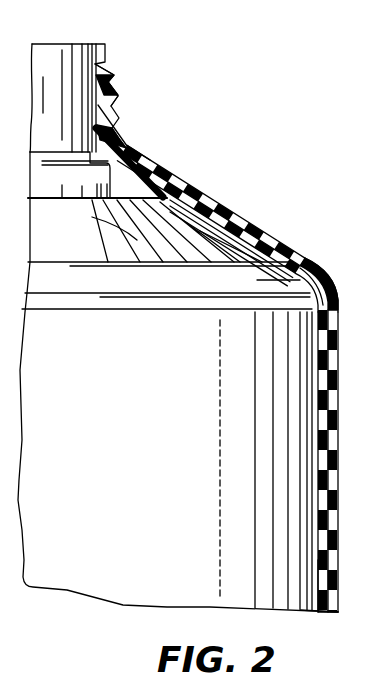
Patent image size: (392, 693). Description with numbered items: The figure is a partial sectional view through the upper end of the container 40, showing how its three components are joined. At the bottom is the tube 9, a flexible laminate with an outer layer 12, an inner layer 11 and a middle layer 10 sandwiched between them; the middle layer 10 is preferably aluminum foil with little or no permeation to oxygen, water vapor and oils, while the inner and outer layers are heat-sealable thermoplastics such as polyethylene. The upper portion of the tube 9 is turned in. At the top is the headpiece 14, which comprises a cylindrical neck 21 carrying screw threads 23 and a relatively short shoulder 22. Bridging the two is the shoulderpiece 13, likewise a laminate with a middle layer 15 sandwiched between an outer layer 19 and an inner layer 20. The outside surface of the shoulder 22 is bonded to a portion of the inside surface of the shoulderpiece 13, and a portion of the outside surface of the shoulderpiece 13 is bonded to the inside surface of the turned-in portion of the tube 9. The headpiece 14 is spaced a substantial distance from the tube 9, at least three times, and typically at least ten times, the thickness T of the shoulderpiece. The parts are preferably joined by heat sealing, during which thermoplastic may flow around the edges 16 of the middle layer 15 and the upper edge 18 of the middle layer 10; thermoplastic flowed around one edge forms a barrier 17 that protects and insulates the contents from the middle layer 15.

The tube 9 is at (333, 616).
The middle layer 10 is at (333, 442).
The inner layer 11 is at (317, 490).
The outer layer 12 is at (352, 518).
The shoulderpiece 13 is at (222, 283).
The headpiece 14 is at (103, 44).
The middle layer 15 is at (193, 190).
The edges 16 is at (133, 157).
The barrier 17 is at (313, 313).
The upper edge 18 is at (307, 270).
The outer layer 19 is at (217, 203).
The inner layer 20 is at (200, 213).
The cylindrical neck 21 is at (115, 73).
The shoulder 22 is at (108, 203).
The screw threads 23 is at (117, 100).
The container 40 is at (333, 553).
The thickness T is at (262, 223).